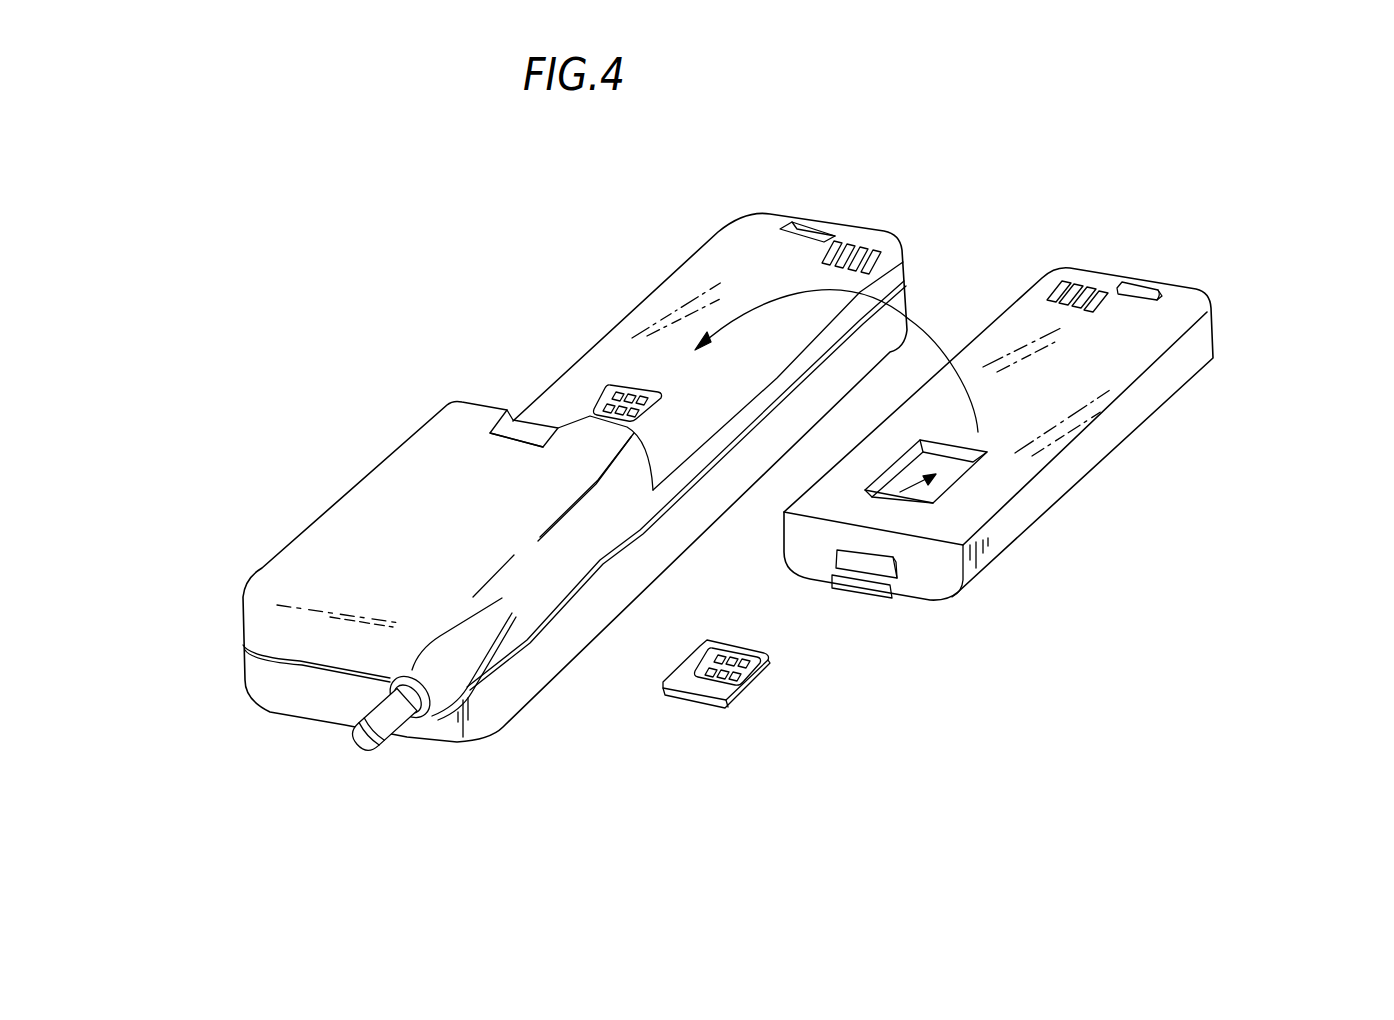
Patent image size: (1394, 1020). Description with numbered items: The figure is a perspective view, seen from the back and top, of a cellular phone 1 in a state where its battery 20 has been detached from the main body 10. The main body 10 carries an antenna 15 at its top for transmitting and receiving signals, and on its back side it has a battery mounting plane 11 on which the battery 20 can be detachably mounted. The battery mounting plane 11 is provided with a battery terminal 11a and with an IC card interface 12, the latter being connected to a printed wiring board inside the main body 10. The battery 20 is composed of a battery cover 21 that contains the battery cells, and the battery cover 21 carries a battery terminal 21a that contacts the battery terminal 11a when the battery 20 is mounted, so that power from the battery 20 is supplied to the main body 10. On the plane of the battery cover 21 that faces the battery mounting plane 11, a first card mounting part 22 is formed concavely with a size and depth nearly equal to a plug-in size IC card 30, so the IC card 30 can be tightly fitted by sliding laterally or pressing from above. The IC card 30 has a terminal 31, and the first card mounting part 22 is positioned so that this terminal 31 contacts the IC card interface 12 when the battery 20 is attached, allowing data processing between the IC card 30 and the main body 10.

The cellular phone 1 is at (1002, 817).
The main body 10 is at (573, 680).
The battery mounting plane 11 is at (620, 337).
The battery terminal 11a is at (858, 248).
The IC card interface 12 is at (598, 396).
The antenna 15 is at (394, 720).
The battery 20 is at (949, 612).
The battery cover 21 is at (1097, 455).
The battery terminal 21a is at (1087, 283).
The first card mounting part 22 is at (950, 472).
The IC card 30 is at (722, 695).
The terminal 31 is at (753, 660).